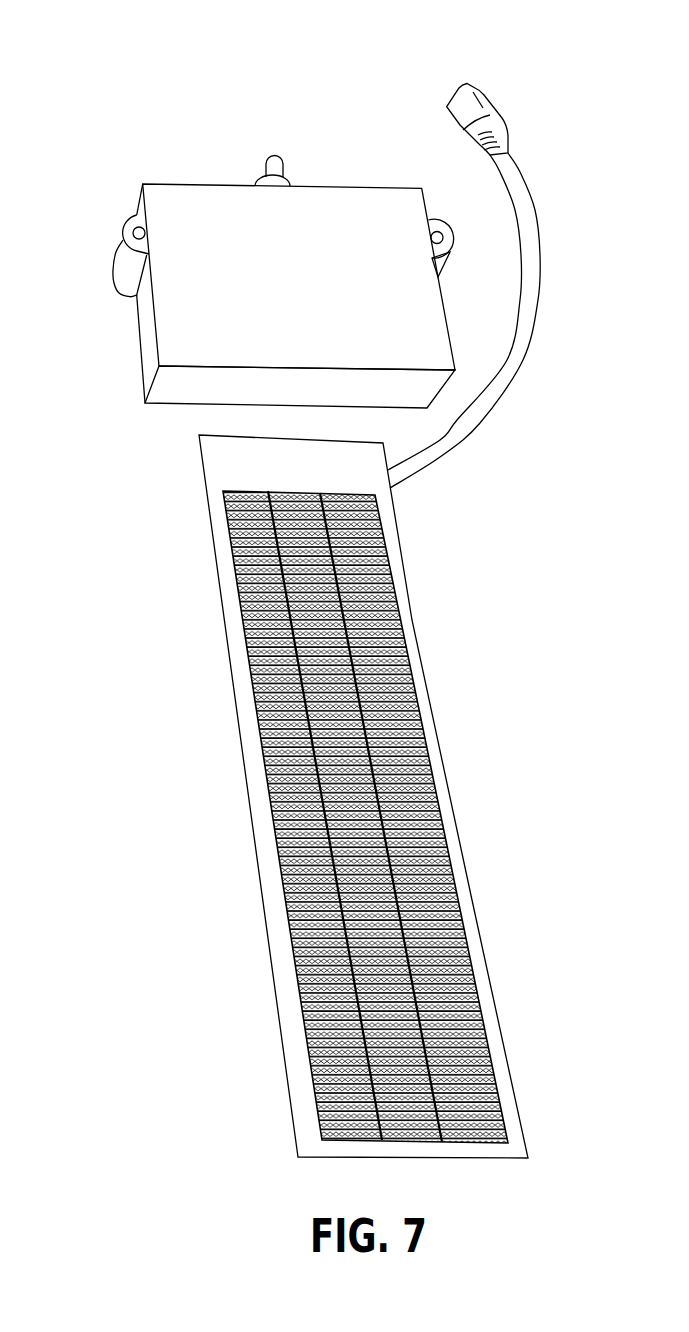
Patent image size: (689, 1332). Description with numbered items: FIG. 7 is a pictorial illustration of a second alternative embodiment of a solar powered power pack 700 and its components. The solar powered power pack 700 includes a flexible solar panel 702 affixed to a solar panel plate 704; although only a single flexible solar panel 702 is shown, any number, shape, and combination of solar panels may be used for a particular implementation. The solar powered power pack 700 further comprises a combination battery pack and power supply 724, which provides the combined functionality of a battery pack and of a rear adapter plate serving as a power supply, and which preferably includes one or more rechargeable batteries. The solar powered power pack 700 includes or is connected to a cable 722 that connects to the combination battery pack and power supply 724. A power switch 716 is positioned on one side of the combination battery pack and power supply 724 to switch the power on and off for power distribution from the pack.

The solar powered power pack 700 is at (80, 90).
The flexible solar panel 702 is at (390, 700).
The solar panel plate 704 is at (465, 897).
The power switch 716 is at (255, 164).
The cable 722 is at (532, 228).
The combination battery pack and power supply 724 is at (307, 213).